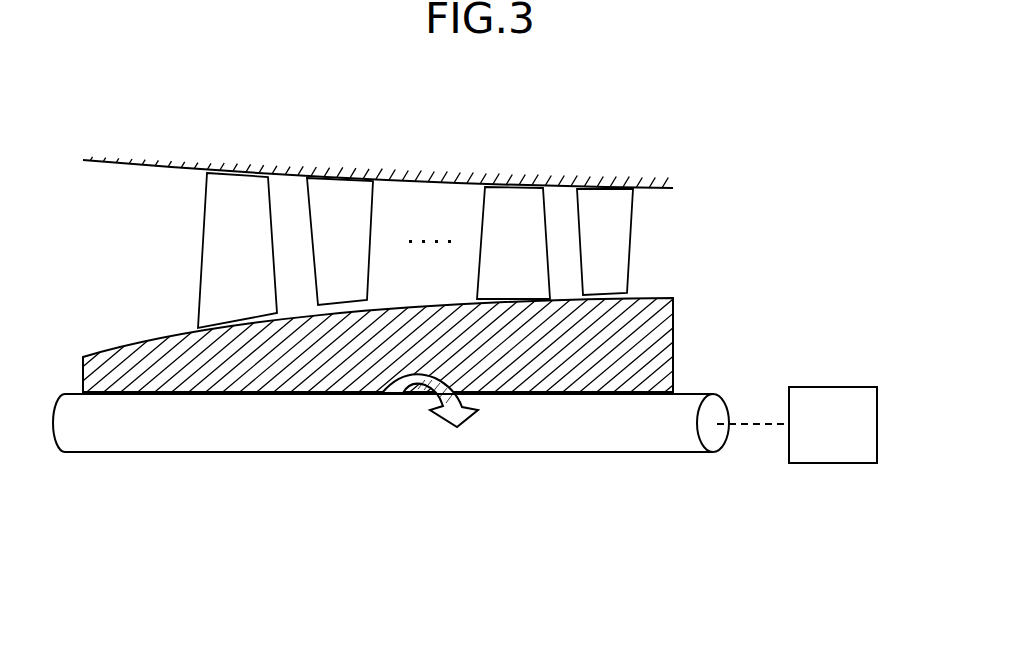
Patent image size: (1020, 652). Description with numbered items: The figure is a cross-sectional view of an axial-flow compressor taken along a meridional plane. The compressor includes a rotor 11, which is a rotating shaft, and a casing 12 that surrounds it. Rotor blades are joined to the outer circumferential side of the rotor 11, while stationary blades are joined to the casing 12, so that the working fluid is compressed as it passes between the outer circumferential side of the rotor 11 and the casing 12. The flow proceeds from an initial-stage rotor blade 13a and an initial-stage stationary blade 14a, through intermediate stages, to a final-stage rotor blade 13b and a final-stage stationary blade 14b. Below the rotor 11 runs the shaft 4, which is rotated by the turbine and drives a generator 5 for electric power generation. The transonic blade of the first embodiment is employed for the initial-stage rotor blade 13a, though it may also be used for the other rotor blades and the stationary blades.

The shaft 4 is at (331, 437).
The generator 5 is at (797, 425).
The rotor 11 is at (665, 332).
The casing 12 is at (393, 175).
The initial-stage rotor blade 13a is at (237, 250).
The final-stage rotor blade 13b is at (513, 243).
The initial-stage stationary blade 14a is at (340, 241).
The final-stage stationary blade 14b is at (605, 242).